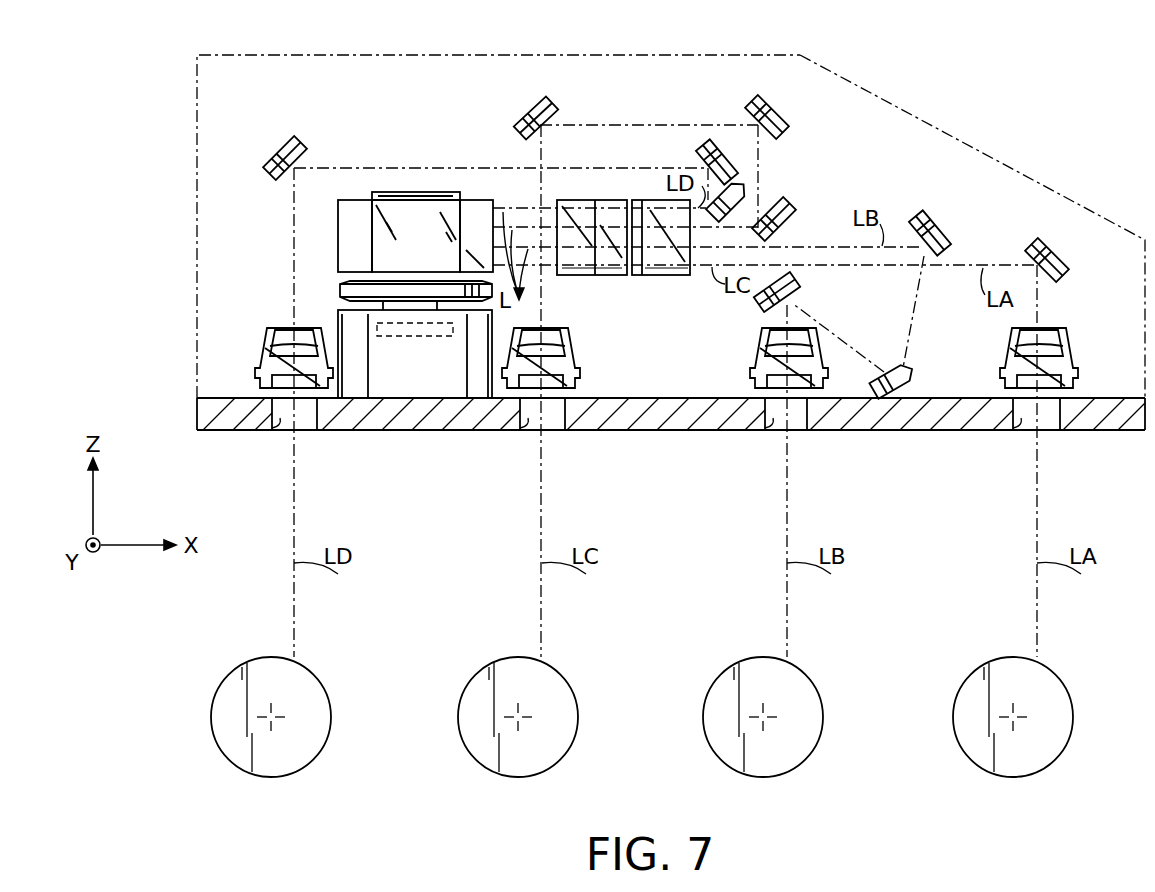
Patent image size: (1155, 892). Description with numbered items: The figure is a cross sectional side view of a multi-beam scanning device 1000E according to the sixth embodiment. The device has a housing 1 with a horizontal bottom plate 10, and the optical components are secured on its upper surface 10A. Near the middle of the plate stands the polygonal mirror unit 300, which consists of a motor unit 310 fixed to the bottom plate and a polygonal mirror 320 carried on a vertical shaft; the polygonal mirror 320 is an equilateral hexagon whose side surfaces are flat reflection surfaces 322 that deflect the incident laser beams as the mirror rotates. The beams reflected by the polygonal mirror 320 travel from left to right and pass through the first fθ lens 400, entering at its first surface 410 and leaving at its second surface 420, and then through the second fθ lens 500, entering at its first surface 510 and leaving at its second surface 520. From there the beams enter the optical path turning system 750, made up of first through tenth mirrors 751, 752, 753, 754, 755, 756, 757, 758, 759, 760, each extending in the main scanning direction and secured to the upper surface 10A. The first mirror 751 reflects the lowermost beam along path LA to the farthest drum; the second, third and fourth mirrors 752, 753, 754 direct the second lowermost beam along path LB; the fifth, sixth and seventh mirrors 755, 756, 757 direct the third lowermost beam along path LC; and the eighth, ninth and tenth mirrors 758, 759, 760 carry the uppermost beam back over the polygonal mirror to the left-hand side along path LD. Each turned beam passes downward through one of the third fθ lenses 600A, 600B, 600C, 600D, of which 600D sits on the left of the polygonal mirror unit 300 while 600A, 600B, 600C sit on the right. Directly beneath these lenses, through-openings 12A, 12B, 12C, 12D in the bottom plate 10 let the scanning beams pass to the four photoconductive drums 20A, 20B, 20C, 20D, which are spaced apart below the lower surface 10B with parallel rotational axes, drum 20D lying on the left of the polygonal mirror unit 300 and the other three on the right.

The multi-beam scanning device 1000E is at (965, 88).
The housing 1 is at (1046, 182).
The bottom plate 10 is at (675, 423).
The upper surface 10A is at (1117, 398).
The lower surface 10B is at (1144, 432).
The opening 12A is at (1015, 432).
The opening 12B is at (768, 432).
The opening 12C is at (523, 432).
The opening 12D is at (273, 432).
The photoconductive drum 20A is at (987, 663).
The photoconductive drum 20B is at (738, 663).
The photoconductive drum 20C is at (492, 663).
The photoconductive drum 20D is at (245, 663).
The polygonal mirror unit 300 is at (399, 196).
The motor unit 310 is at (350, 332).
The polygonal mirror 320 is at (465, 200).
The reflection surface 322 is at (350, 218).
The first fθ lens 400 is at (578, 225).
The first surface 410 is at (497, 208).
The second surface 420 is at (628, 278).
The second fθ lens 500 is at (675, 230).
The first surface 510 is at (620, 207).
The second surface 520 is at (690, 278).
The third fθ lens 600A is at (1007, 352).
The third fθ lens 600B is at (757, 366).
The third fθ lens 600C is at (578, 364).
The third fθ lens 600D is at (278, 353).
The optical path turning system 750 is at (894, 191).
The first mirror 751 is at (1060, 264).
The second mirror 752 is at (937, 232).
The third mirror 753 is at (920, 370).
The fourth mirror 754 is at (800, 290).
The fifth mirror 755 is at (797, 215).
The sixth mirror 756 is at (778, 122).
The seventh mirror 757 is at (527, 112).
The eighth mirror 758 is at (745, 188).
The ninth mirror 759 is at (708, 147).
The tenth mirror 760 is at (275, 155).